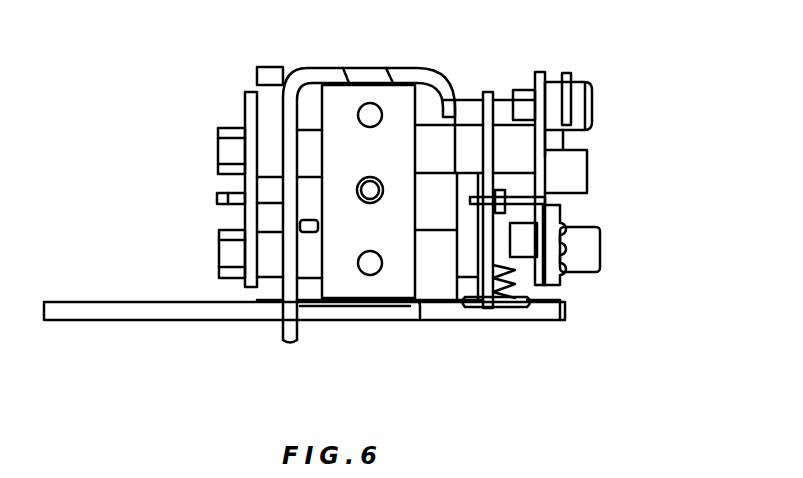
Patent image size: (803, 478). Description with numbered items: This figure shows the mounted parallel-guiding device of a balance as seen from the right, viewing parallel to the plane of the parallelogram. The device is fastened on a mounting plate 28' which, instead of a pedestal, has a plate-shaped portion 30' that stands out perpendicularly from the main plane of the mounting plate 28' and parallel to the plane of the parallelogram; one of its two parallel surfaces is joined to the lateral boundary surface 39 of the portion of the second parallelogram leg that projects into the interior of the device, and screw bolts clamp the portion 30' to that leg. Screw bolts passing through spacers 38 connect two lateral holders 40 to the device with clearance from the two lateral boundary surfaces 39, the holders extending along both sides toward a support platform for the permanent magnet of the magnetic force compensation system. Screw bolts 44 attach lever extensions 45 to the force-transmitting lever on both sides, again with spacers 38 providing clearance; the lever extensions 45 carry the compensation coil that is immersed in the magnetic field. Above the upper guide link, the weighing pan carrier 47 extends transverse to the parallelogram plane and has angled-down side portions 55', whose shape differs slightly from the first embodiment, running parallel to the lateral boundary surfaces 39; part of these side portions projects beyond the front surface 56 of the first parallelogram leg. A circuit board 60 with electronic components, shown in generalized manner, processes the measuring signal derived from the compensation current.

The mounting plate 28' is at (304, 276).
The plate-shaped portion 30' is at (303, 235).
The spacers 38 is at (457, 157).
The lateral boundary surface 39 is at (283, 205).
The lateral holder 40 is at (217, 198).
The screw bolt 44 is at (218, 150).
The lever extension 45 is at (247, 104).
The weighing pan carrier 47 is at (428, 78).
The side portions 55' is at (384, 72).
The front surface 56 is at (345, 238).
The circuit board 60 is at (582, 211).